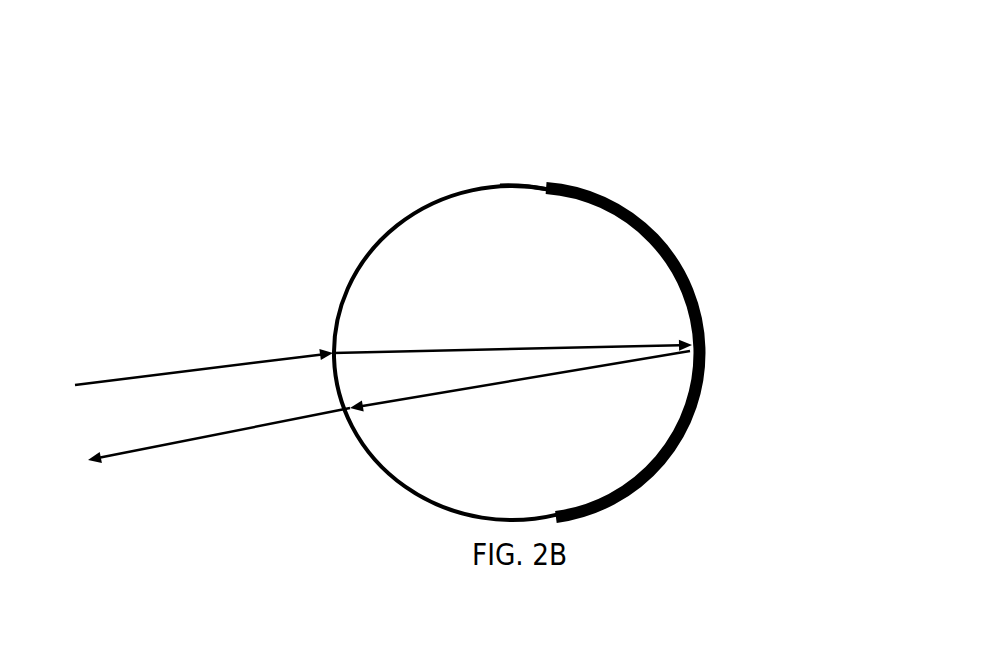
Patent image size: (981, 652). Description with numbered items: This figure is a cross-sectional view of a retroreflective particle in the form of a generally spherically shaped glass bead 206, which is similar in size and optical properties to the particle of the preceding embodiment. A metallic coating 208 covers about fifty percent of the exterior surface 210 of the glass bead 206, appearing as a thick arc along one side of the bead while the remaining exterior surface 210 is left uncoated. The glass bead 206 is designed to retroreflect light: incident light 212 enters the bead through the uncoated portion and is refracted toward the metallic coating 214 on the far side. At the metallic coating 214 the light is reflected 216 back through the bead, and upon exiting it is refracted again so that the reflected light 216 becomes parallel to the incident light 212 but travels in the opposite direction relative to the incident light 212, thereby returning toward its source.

The glass bead 206 is at (340, 216).
The metallic coating 208 is at (667, 240).
The exterior surface 210 is at (518, 172).
The incident light 212 is at (193, 368).
The metallic coating 214 is at (466, 352).
The reflected light 216 is at (222, 435).